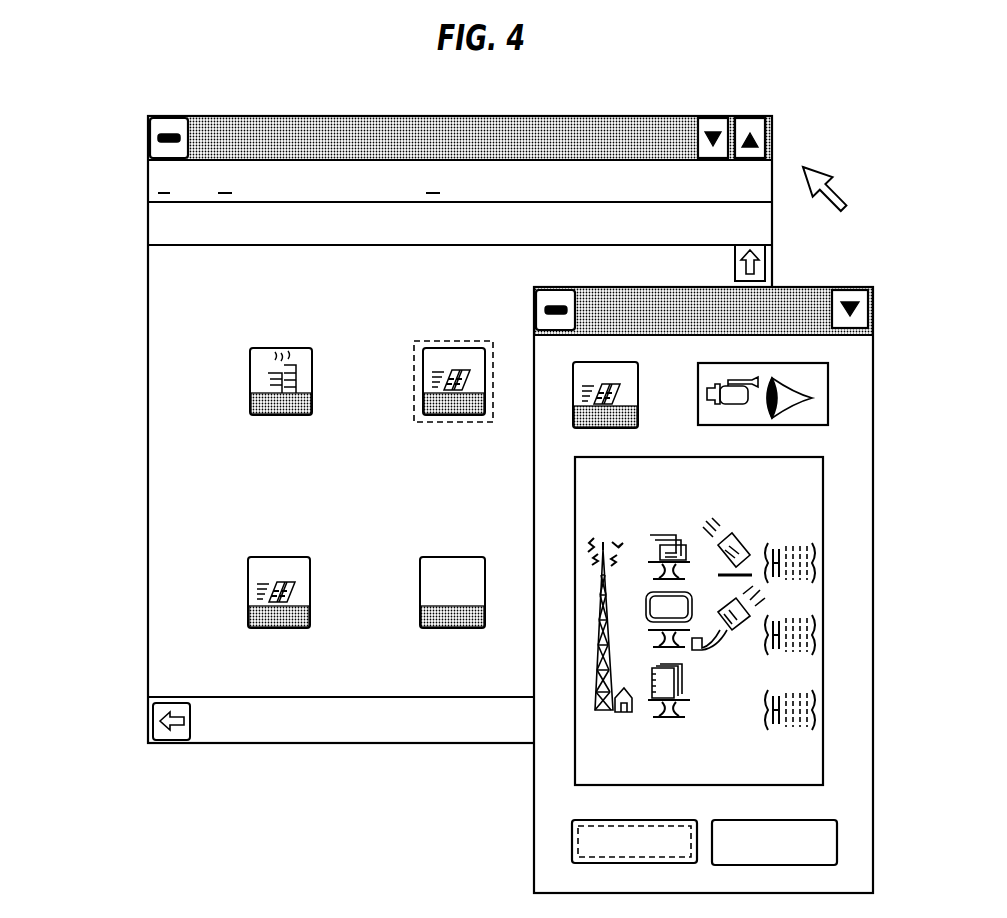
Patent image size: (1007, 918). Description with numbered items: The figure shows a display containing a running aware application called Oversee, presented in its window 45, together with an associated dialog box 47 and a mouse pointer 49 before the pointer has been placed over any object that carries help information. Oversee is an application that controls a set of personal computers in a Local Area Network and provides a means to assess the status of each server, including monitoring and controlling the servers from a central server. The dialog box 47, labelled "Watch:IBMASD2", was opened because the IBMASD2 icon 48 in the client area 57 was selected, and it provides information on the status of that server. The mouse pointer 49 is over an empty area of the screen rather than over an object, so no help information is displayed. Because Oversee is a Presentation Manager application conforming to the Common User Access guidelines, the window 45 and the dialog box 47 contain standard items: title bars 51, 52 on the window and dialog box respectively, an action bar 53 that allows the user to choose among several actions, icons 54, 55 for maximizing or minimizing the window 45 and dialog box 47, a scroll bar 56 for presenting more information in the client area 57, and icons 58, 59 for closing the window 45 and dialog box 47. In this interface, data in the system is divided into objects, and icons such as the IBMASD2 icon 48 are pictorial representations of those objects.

The window 45 is at (772, 148).
The dialog box 47 is at (873, 304).
The IBMASD2 icon 48 is at (420, 360).
The mouse pointer 49 is at (837, 190).
The title bar 51 is at (496, 408).
The title bar 52 is at (691, 556).
The action bar 53 is at (148, 185).
The icon for maximizing or minimizing 54 is at (722, 118).
The icon for maximizing or minimizing 55 is at (873, 325).
The scroll bar 56 is at (772, 272).
The client area 57 is at (414, 492).
The icon to close the window 58 is at (148, 140).
The icon to close the window 59 is at (535, 314).